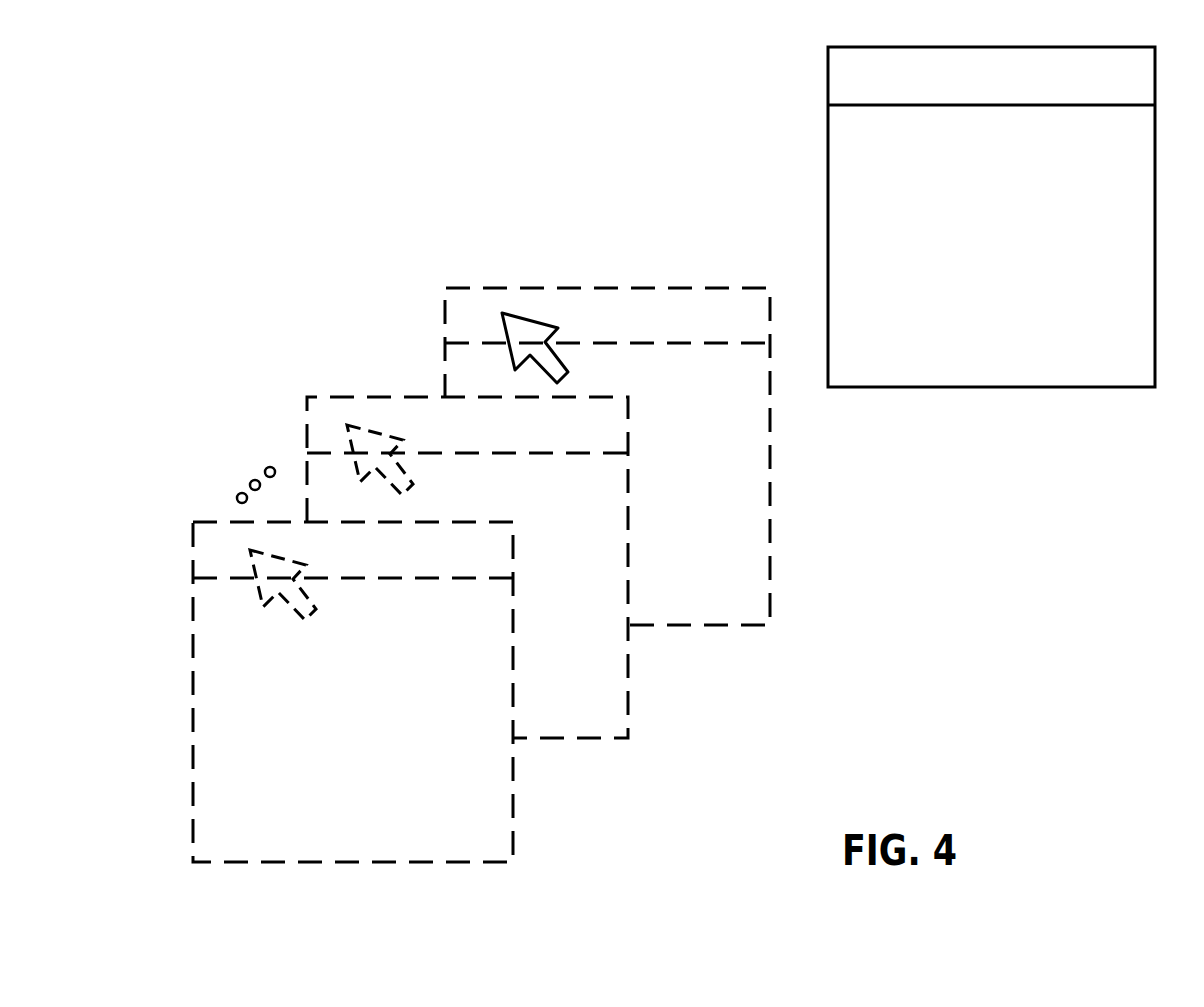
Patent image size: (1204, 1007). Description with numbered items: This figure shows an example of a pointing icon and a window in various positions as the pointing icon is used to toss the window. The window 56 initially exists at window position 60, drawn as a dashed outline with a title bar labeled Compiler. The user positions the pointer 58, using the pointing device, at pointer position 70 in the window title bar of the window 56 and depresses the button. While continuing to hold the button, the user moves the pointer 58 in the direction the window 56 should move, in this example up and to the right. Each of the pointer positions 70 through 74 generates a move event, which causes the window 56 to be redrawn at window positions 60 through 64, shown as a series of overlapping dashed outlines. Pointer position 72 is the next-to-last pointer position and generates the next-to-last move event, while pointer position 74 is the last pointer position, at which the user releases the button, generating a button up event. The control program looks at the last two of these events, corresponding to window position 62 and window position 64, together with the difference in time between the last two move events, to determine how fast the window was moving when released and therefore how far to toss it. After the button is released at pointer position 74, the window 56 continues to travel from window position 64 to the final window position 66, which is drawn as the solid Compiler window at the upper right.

The window 56 is at (827, 82).
The pointer 58 is at (419, 446).
The window position 60 is at (513, 862).
The window position 62 is at (627, 738).
The window position 64 is at (770, 625).
The window position 66 is at (1155, 387).
The pointer position 70 is at (250, 550).
The pointer position 72 is at (347, 425).
The pointer position 74 is at (502, 313).